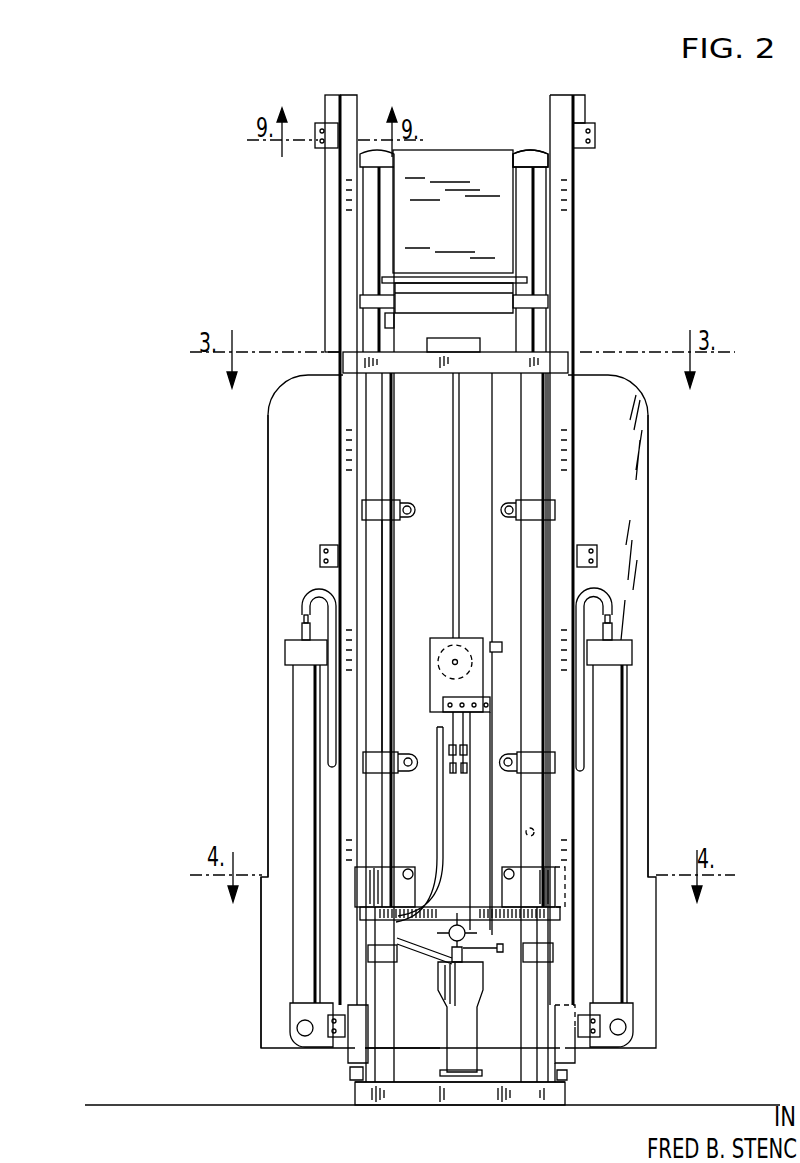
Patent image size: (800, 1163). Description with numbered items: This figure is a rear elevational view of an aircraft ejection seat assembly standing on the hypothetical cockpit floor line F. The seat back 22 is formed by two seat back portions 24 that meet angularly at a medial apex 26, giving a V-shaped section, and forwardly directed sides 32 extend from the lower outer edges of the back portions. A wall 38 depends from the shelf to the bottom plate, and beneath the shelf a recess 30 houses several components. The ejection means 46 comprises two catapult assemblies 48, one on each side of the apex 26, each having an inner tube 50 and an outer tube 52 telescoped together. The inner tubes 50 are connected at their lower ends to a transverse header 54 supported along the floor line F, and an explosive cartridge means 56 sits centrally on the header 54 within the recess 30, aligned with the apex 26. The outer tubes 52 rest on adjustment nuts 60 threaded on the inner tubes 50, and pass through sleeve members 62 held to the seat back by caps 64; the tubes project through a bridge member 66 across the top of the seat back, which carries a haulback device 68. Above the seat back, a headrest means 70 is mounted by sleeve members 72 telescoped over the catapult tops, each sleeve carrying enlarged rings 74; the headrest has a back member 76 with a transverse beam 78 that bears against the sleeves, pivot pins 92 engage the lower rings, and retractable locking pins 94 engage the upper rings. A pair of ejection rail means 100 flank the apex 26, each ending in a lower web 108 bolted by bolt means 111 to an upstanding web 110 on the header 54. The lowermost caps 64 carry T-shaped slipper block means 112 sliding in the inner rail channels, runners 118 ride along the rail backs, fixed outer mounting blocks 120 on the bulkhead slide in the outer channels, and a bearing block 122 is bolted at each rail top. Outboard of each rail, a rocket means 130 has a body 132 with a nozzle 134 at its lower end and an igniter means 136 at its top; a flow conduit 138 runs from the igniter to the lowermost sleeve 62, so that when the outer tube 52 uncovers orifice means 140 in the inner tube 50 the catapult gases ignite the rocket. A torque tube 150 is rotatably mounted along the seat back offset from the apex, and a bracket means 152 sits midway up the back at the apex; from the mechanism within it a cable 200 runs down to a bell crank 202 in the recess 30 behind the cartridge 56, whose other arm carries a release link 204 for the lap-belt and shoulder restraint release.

The seat back 22 is at (298, 537).
The seat back portions 24 is at (280, 472).
The medial apex 26 is at (455, 522).
The recess 30 is at (508, 1040).
The sides 32 is at (262, 1000).
The wall 38 is at (402, 1038).
The ejection means 46 is at (466, 1092).
The catapult assemblies 48 is at (532, 467).
The inner tube 50 is at (532, 992).
The outer tube 52 is at (390, 602).
The header 54 is at (510, 1097).
The explosive cartridge means 56 is at (468, 1037).
The adjustment nuts 60 is at (370, 957).
The sleeve members 62 is at (386, 452).
The caps 64 is at (402, 502).
The bridge member 66 is at (440, 364).
The haulback device 68 is at (467, 345).
The headrest means 70 is at (454, 209).
The sleeve members 72 is at (537, 243).
The rings 74 is at (550, 301).
The back member 76 is at (437, 241).
The beam 78 is at (475, 278).
The pins 92 is at (392, 316).
The locking pins 94 is at (525, 160).
The ejection rail means 100 is at (352, 273).
The lower web 108 is at (572, 1085).
The upstanding web 110 is at (562, 1085).
The bolt means 111 is at (568, 1076).
The slipper block means 112 is at (568, 890).
The runners 118 is at (356, 1040).
The outer mounting blocks 120 is at (325, 148).
The bearing block 122 is at (330, 100).
The rocket means 130 is at (292, 798).
The rocket body 132 is at (625, 790).
The nozzle 134 is at (625, 1030).
The igniter means 136 is at (622, 650).
The flow conduit 138 is at (612, 606).
The orifice means 140 is at (540, 832).
The torque tube 150 is at (493, 602).
The bracket means 152 is at (432, 652).
The cable 200 is at (475, 838).
The bell crank 202 is at (462, 923).
The release link 204 is at (428, 957).
The floor line F is at (190, 1105).